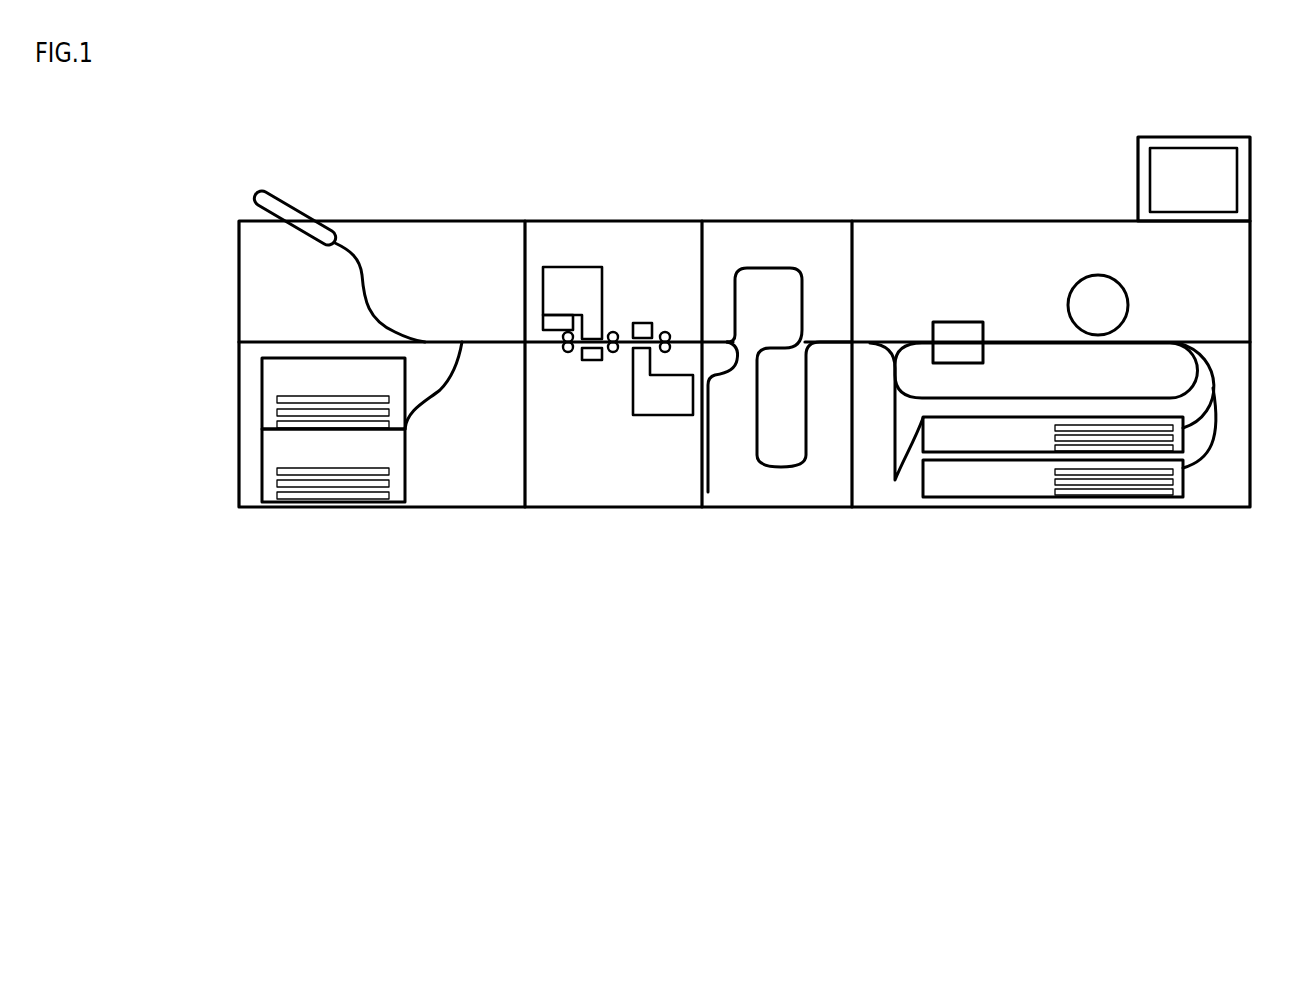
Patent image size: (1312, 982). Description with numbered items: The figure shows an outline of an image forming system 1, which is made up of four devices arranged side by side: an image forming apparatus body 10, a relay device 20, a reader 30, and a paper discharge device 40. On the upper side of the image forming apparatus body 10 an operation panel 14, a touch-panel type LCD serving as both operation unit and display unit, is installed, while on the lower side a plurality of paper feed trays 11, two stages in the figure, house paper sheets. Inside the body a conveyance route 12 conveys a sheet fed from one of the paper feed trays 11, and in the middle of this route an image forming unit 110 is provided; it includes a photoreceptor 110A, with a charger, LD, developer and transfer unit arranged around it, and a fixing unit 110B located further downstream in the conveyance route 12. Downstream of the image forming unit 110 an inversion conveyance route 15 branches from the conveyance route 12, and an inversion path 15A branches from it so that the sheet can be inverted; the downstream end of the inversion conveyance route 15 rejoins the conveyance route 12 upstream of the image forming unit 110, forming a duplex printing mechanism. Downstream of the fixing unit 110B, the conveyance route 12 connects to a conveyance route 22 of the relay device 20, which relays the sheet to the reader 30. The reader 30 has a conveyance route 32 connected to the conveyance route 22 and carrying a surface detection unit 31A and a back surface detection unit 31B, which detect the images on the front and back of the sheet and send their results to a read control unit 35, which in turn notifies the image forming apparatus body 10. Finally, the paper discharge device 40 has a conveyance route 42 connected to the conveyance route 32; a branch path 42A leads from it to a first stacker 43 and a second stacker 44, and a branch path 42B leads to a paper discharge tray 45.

The image forming system 1 is at (782, 823).
The image forming apparatus body 10 is at (1181, 512).
The paper feed trays 11 is at (990, 490).
The conveyance route 12 is at (1208, 356).
The operation panel 14 is at (1136, 140).
The inversion conveyance route 15 is at (1062, 393).
The inversion path 15A is at (893, 417).
The relay device 20 is at (831, 512).
The conveyance route 22 is at (770, 268).
The reader 30 is at (657, 512).
The surface detection unit 31A is at (643, 322).
The back surface detection unit 31B is at (592, 362).
The conveyance route 32 is at (558, 347).
The read control unit 35 is at (553, 315).
The paper discharge device 40 is at (412, 512).
The conveyance route 42 is at (415, 355).
The branch path 42A is at (437, 402).
The branch path 42B is at (360, 257).
The first stacker 43 is at (262, 393).
The second stacker 44 is at (262, 482).
The paper discharge tray 45 is at (310, 210).
The image forming unit 110 is at (1059, 295).
The photoreceptor 110A is at (1072, 290).
The fixing unit 110B is at (948, 322).